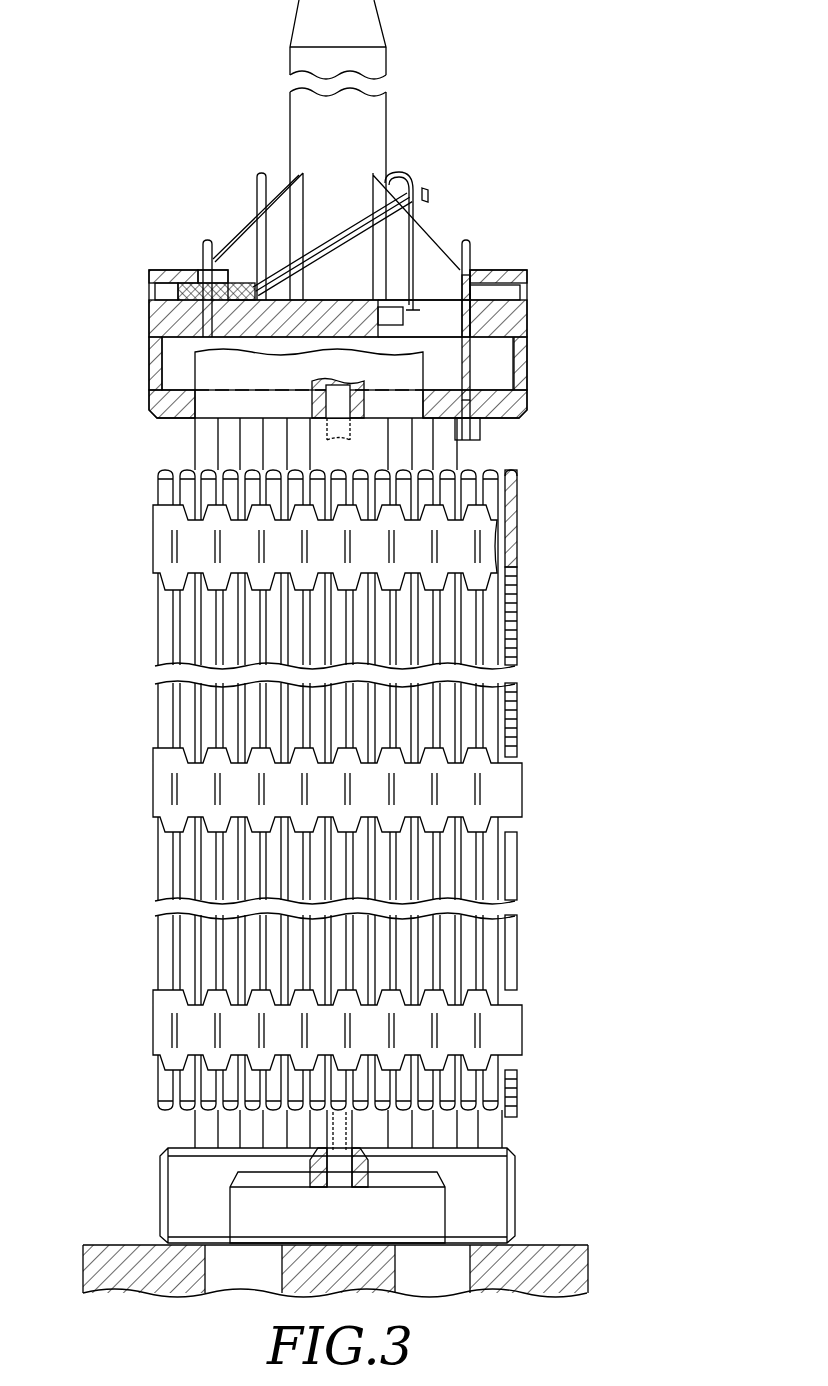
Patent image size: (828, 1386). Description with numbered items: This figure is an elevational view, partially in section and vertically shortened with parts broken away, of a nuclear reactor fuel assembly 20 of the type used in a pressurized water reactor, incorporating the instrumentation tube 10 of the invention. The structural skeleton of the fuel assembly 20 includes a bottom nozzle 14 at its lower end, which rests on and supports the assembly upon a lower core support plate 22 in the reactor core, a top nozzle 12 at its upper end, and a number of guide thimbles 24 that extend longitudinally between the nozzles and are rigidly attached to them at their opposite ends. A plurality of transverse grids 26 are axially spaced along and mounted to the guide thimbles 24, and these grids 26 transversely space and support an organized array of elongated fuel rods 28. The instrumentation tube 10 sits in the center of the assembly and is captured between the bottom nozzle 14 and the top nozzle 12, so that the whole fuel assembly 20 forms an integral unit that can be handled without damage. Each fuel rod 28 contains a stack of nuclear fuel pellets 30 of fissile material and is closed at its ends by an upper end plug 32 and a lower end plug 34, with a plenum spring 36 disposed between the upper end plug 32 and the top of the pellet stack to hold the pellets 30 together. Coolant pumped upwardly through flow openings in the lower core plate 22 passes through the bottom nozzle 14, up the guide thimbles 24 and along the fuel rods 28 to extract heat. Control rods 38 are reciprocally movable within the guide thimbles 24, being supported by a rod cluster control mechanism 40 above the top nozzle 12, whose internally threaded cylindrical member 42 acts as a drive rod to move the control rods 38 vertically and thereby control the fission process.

The instrumentation tube 10 is at (336, 1182).
The top nozzle 12 is at (538, 312).
The bottom nozzle 14 is at (531, 1177).
The fuel assembly 20 is at (612, 327).
The lower core support plate 22 is at (567, 1243).
The guide thimbles 24 is at (487, 453).
The transverse grids 26 is at (153, 545).
The fuel rods 28 is at (515, 716).
The nuclear fuel pellets 30 is at (517, 634).
The upper end plug 32 is at (515, 470).
The lower end plug 34 is at (517, 1108).
The plenum spring 36 is at (515, 528).
The control rods 38 is at (470, 390).
The rod cluster control mechanism 40 is at (418, 166).
The internally threaded cylindrical member 42 is at (388, 107).